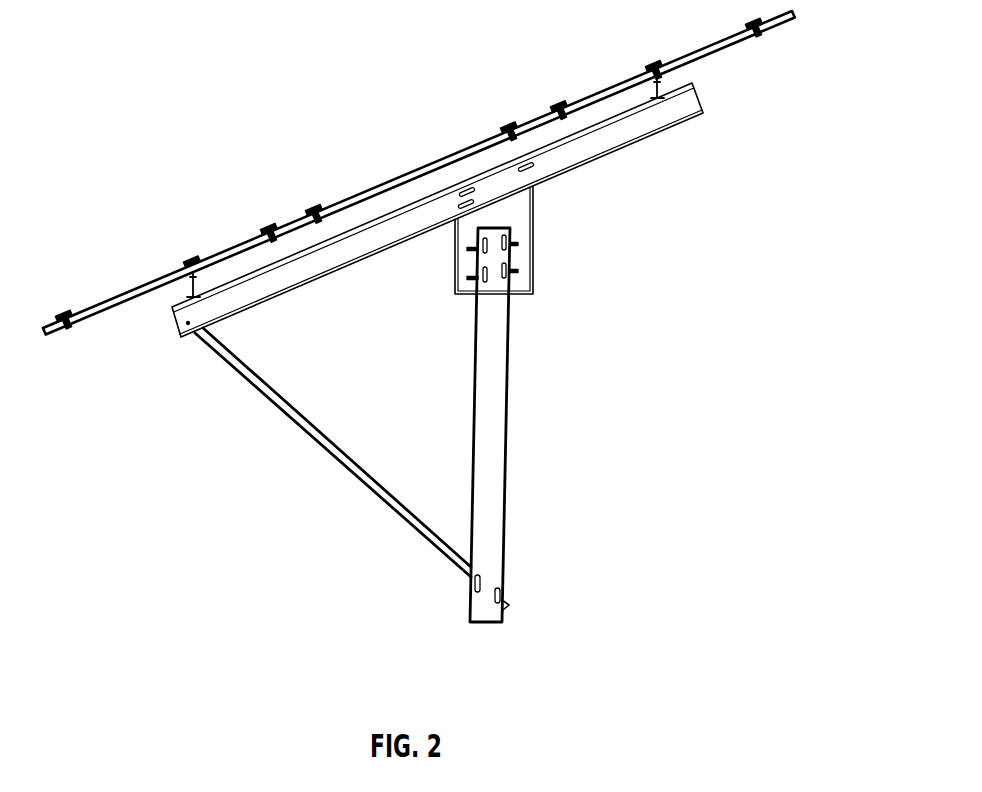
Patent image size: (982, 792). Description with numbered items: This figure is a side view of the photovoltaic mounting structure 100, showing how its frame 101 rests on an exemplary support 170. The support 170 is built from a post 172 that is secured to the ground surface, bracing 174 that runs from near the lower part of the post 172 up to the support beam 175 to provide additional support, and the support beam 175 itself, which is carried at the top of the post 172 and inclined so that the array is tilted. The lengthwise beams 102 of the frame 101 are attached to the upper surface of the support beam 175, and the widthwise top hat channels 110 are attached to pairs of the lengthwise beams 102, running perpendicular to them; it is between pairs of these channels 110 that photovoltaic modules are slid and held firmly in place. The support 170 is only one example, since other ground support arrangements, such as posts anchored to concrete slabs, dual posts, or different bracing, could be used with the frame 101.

The photovoltaic mounting structure 100 is at (352, 53).
The frame 101 is at (113, 272).
The lengthwise beams 102 is at (191, 290).
The widthwise top hat channels 110 is at (49, 341).
The support 170 is at (262, 516).
The post 172 is at (508, 416).
The bracing 174 is at (404, 522).
The support beam 175 is at (688, 102).